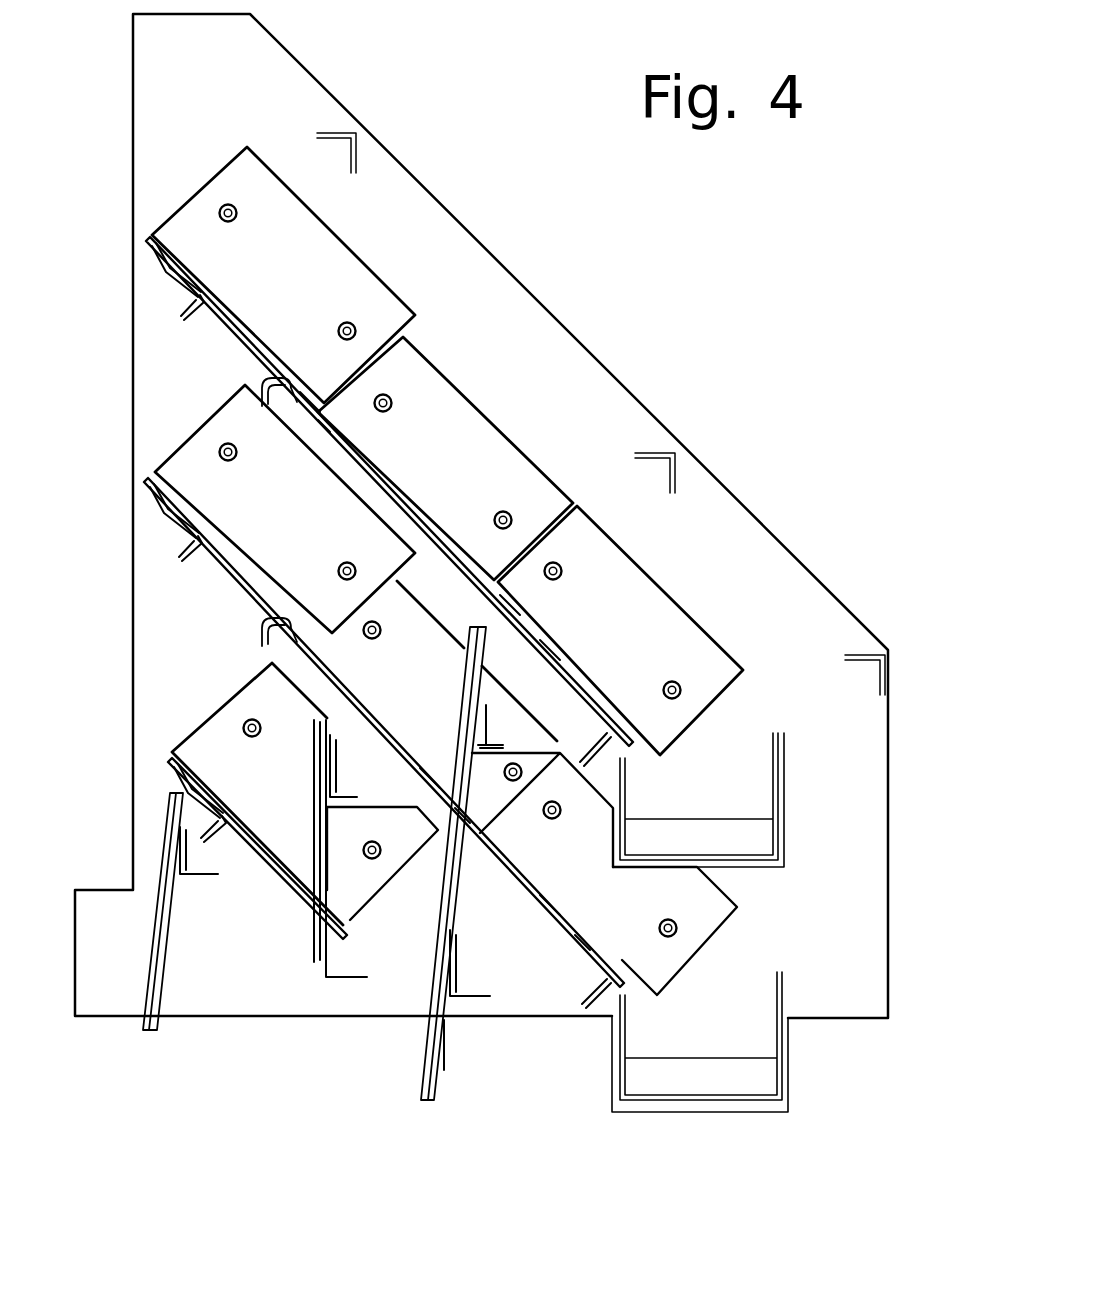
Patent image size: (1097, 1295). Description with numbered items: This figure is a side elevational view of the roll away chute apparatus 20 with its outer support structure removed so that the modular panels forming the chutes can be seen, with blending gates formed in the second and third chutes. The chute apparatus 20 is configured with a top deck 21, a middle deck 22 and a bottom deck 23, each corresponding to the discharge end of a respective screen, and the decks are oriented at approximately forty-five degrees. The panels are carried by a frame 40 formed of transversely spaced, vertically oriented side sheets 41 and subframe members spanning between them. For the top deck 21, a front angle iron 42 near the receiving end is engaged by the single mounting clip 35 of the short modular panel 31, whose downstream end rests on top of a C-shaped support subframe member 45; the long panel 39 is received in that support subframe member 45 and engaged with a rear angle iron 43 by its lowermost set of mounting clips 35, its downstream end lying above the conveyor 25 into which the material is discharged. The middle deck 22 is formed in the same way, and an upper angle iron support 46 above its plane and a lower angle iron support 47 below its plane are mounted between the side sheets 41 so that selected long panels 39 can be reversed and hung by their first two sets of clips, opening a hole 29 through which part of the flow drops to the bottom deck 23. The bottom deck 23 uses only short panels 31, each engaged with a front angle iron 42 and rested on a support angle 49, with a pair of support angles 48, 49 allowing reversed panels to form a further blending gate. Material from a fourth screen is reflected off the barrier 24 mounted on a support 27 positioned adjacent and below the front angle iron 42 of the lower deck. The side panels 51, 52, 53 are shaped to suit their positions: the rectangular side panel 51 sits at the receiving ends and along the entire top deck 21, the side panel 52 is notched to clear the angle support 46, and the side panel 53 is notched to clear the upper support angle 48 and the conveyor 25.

The chute apparatus 20 is at (730, 290).
The top deck 21 is at (215, 240).
The middle deck 22 is at (230, 485).
The bottom deck 23 is at (190, 712).
The barrier 24 is at (140, 970).
The conveyor 25 is at (764, 840).
The support 27 is at (215, 874).
The hole 29 is at (420, 750).
The short modular panel 31 is at (233, 312).
The mounting clips 35 is at (172, 275).
The long panel 39 is at (395, 508).
The frame 40 is at (368, 118).
The side sheets 41 is at (578, 372).
The front angle iron 42 is at (186, 308).
The rear angle iron 43 is at (612, 762).
The support subframe member 45 is at (262, 385).
The upper angle iron support 46 is at (497, 742).
The lower angle iron support 47 is at (470, 997).
The upper support angle 48 is at (348, 790).
The support angle 49 is at (353, 979).
The side panel 51 is at (320, 248).
The side panel 52 is at (425, 617).
The side panel 53 is at (360, 882).